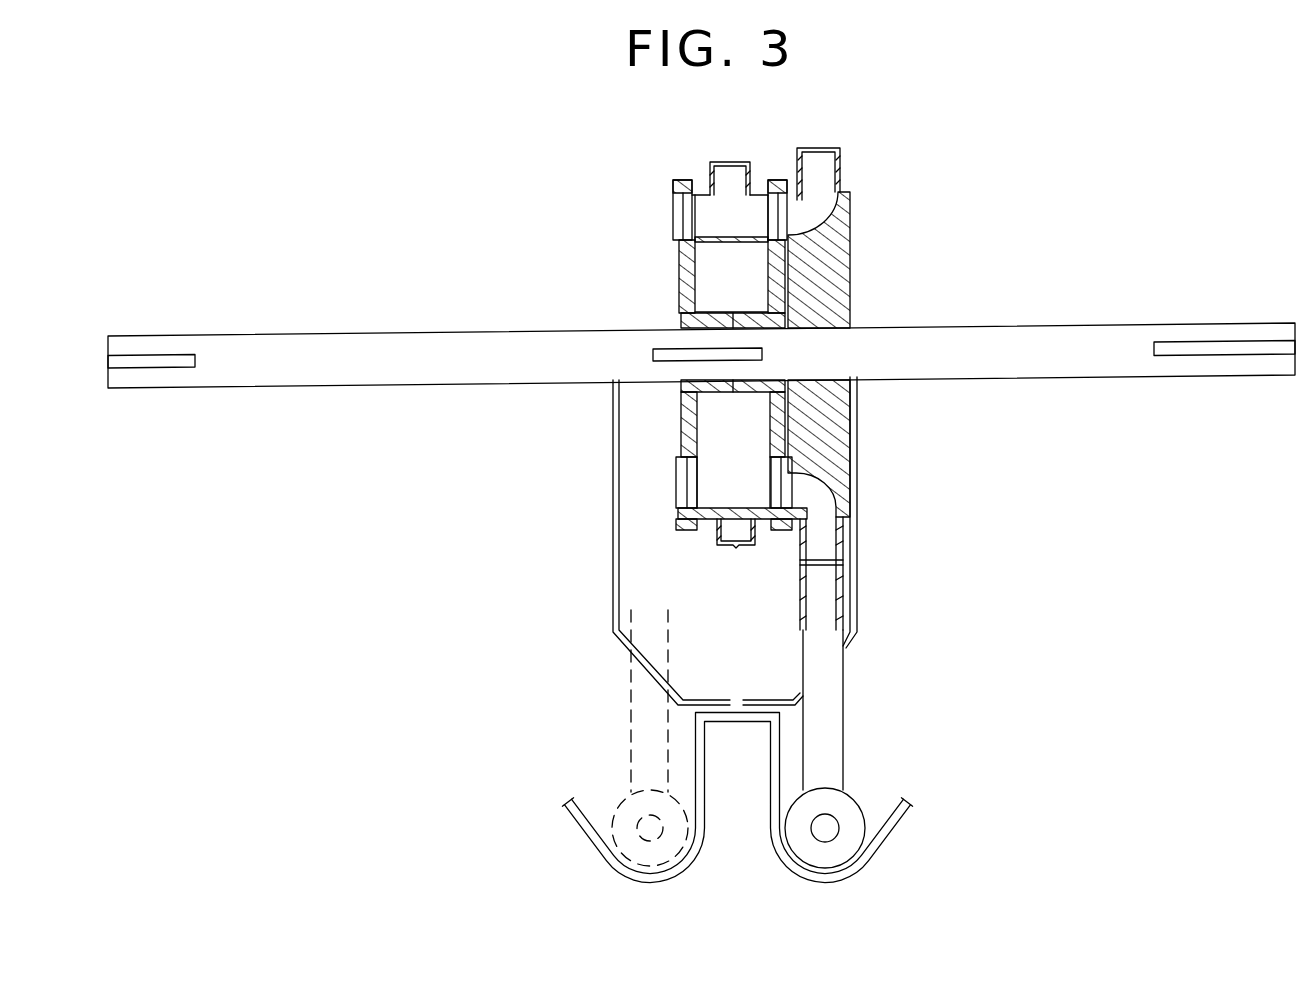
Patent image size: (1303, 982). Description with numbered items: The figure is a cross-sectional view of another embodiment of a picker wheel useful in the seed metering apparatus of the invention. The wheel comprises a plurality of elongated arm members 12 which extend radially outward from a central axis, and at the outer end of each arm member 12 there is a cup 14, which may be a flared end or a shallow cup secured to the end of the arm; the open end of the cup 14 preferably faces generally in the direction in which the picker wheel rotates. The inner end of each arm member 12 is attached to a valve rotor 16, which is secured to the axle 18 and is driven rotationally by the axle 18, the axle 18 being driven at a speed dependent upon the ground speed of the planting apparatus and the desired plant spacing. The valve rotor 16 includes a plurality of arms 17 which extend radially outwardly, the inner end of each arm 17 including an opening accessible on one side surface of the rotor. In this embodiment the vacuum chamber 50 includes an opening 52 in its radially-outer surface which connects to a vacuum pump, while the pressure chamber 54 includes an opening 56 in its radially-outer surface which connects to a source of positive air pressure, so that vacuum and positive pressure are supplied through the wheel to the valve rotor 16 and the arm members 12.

The arm member 12 is at (630, 708).
The cup 14 is at (604, 855).
The valve rotor 16 is at (853, 253).
The arm 17 is at (843, 148).
The axle 18 is at (1018, 325).
The vacuum chamber 50 is at (674, 442).
The opening 52 is at (738, 546).
The pressure chamber 54 is at (701, 184).
The opening 56 is at (735, 162).